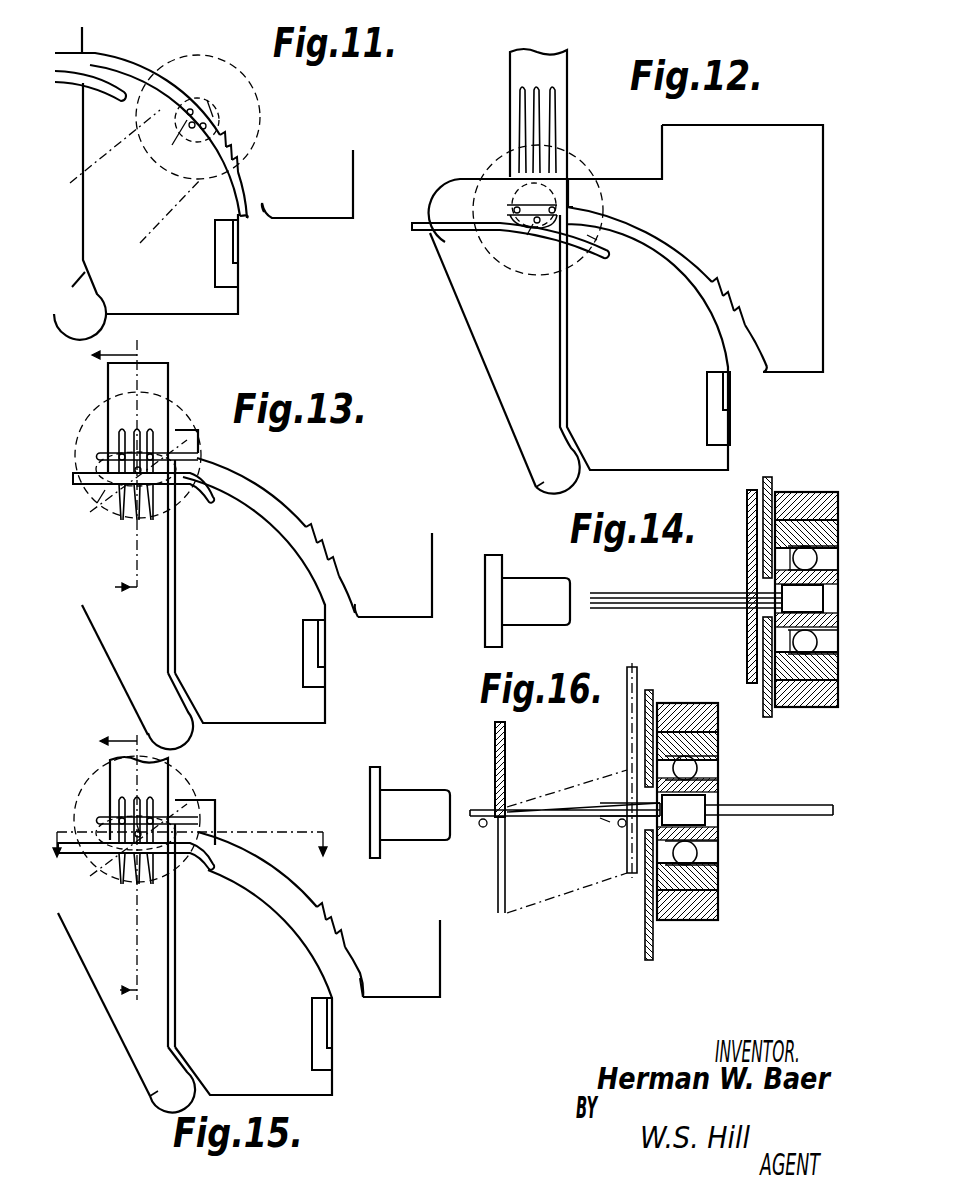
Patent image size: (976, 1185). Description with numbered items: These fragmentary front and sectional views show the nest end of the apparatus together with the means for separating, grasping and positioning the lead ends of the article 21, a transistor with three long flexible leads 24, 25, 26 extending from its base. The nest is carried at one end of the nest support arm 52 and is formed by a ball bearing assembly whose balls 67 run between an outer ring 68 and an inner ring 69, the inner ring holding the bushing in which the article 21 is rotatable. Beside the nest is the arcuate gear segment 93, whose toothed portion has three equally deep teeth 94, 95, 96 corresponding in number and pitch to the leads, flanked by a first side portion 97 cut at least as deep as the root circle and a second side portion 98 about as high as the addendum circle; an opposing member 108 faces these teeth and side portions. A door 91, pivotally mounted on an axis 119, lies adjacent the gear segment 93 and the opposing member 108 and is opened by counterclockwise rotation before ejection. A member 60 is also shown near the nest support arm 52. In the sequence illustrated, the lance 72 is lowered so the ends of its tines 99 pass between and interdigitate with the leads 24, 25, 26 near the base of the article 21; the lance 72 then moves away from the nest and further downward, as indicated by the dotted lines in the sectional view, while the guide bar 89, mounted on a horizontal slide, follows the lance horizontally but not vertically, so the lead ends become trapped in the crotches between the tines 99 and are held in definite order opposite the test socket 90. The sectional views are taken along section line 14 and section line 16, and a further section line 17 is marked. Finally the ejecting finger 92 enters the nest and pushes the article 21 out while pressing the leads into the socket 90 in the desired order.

In FIG. 13, the section line 14— 14 is at (97, 470).
In FIG. 15, the section line 16— 16 is at (107, 860).
In FIG. 15, the section line 17- 17 is at (192, 860).
In FIG. 11, the article 21 is at (238, 181).
In FIG. 12, the article 21 is at (504, 256).
In FIG. 11, the lead 24 is at (192, 106).
In FIG. 12, the lead 24 is at (570, 208).
In FIG. 13, the lead 24 is at (102, 452).
In FIG. 15, the lead 24 is at (102, 816).
In FIG. 16, the lead 24 is at (593, 803).
In FIG. 11, the lead 25 is at (200, 131).
In FIG. 12, the lead 25 is at (527, 238).
In FIG. 13, the lead 25 is at (103, 493).
In FIG. 15, the lead 25 is at (139, 822).
In FIG. 16, the lead 25 is at (602, 823).
In FIG. 11, the lead 26 is at (210, 123).
In FIG. 12, the lead 26 is at (511, 211).
In FIG. 13, the lead 26 is at (198, 455).
In FIG. 15, the lead 26 is at (190, 828).
In FIG. 11, the nest support arm 52 is at (253, 223).
In FIG. 12, the nest support arm 52 is at (597, 167).
In FIG. 13, the nest support arm 52 is at (227, 466).
In FIG. 15, the nest support arm 52 is at (220, 870).
In FIG. 14, the nest support arm 52 is at (806, 599).
In FIG. 16, the nest support arm 52 is at (690, 924).
In FIG. 11, the stop block 60 is at (230, 240).
In FIG. 12, the stop block 60 is at (720, 405).
In FIG. 13, the stop block 60 is at (317, 651).
In FIG. 15, the stop block 60 is at (312, 1028).
In FIG. 16, the balls 67 is at (697, 768).
In FIG. 16, the outer ring 68 is at (720, 878).
In FIG. 16, the inner ring 69 is at (713, 786).
In FIG. 12, the lance 72 is at (553, 68).
In FIG. 13, the lance 72 is at (163, 381).
In FIG. 15, the lance 72 is at (110, 774).
In FIG. 14, the lance 72 is at (747, 550).
In FIG. 16, the lance 72 is at (495, 745).
In FIG. 11, the guide bar 89 is at (123, 97).
In FIG. 12, the guide bar 89 is at (420, 234).
In FIG. 13, the guide bar 89 is at (197, 508).
In FIG. 15, the guide bar 89 is at (80, 856).
In FIG. 14, the guide bar 89 is at (740, 613).
In FIG. 16, the guide bar 89 is at (483, 828).
In FIG. 15, the test socket 90 is at (407, 838).
In FIG. 14, the test socket 90 is at (542, 578).
In FIG. 11, the door 91 is at (88, 278).
In FIG. 12, the door 91 is at (482, 336).
In FIG. 13, the door 91 is at (127, 674).
In FIG. 15, the door 91 is at (117, 1033).
In FIG. 14, the door 91 is at (770, 717).
In FIG. 16, the door 91 is at (647, 954).
In FIG. 16, the ejecting finger 92 is at (820, 821).
In FIG. 11, the gear segment 93 is at (354, 165).
In FIG. 12, the gear segment 93 is at (790, 130).
In FIG. 13, the gear segment 93 is at (380, 620).
In FIG. 15, the gear segment 93 is at (388, 997).
In FIG. 11, the tooth 94 is at (242, 167).
In FIG. 12, the tooth 94 is at (743, 319).
In FIG. 13, the tooth 94 is at (343, 562).
In FIG. 15, the tooth 94 is at (343, 940).
In FIG. 11, the tooth 95 is at (236, 153).
In FIG. 12, the tooth 95 is at (736, 303).
In FIG. 13, the tooth 95 is at (330, 548).
In FIG. 15, the tooth 95 is at (332, 924).
In FIG. 11, the tooth 96 is at (230, 140).
In FIG. 12, the tooth 96 is at (726, 290).
In FIG. 13, the tooth 96 is at (320, 534).
In FIG. 15, the tooth 96 is at (324, 908).
In FIG. 11, the first side portion 97 is at (270, 210).
In FIG. 12, the first side portion 97 is at (762, 348).
In FIG. 13, the first side portion 97 is at (360, 604).
In FIG. 15, the first side portion 97 is at (362, 973).
In FIG. 11, the second side portion 98 is at (139, 63).
In FIG. 12, the second side portion 98 is at (662, 238).
In FIG. 13, the second side portion 98 is at (287, 511).
In FIG. 15, the second side portion 98 is at (250, 853).
In FIG. 12, the tines 99 is at (513, 145).
In FIG. 13, the tines 99 is at (142, 518).
In FIG. 15, the tines 99 is at (142, 884).
In FIG. 14, the tines 99 is at (755, 683).
In FIG. 16, the tines 99 is at (493, 908).
In FIG. 11, the opposing member 108 is at (146, 211).
In FIG. 12, the opposing member 108 is at (640, 258).
In FIG. 13, the opposing member 108 is at (277, 541).
In FIG. 15, the opposing member 108 is at (275, 900).
In FIG. 12, the axis 119 is at (547, 471).
In FIG. 15, the axis 119 is at (162, 1092).